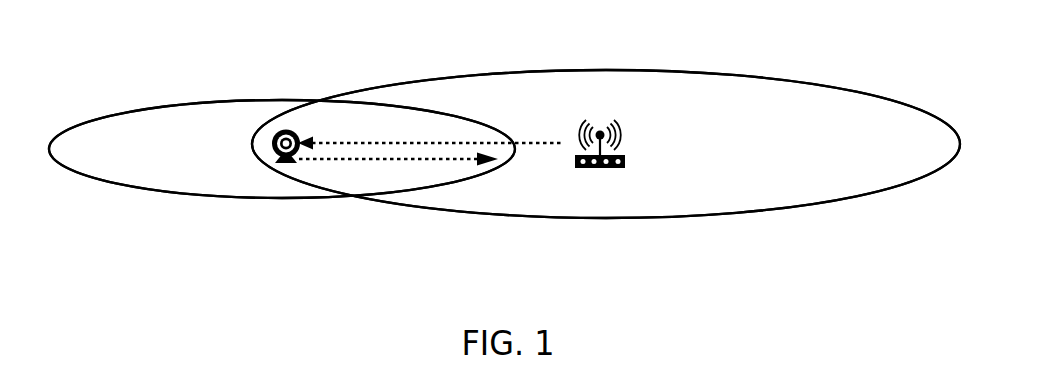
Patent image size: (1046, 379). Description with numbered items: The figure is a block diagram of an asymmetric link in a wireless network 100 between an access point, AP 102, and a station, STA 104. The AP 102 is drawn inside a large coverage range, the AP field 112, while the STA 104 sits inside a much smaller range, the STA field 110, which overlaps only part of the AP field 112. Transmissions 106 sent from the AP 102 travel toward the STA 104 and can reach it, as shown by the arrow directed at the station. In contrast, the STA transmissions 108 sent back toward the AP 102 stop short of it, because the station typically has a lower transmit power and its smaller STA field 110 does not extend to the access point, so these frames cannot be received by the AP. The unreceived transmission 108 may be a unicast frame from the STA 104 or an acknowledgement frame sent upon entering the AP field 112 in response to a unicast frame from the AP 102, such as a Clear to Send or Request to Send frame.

The wireless network 100 is at (100, 44).
The access point 102 is at (603, 169).
The station 104 is at (293, 160).
The transmissions 106 is at (489, 141).
The STA transmissions 108 is at (453, 162).
The STA field 110 is at (272, 99).
The AP field 112 is at (605, 69).